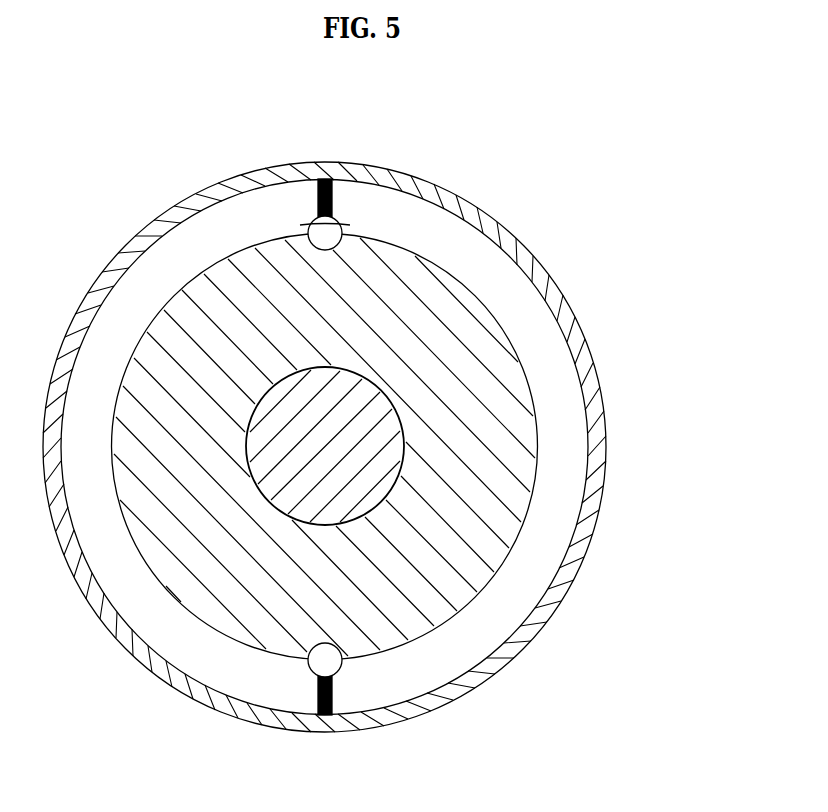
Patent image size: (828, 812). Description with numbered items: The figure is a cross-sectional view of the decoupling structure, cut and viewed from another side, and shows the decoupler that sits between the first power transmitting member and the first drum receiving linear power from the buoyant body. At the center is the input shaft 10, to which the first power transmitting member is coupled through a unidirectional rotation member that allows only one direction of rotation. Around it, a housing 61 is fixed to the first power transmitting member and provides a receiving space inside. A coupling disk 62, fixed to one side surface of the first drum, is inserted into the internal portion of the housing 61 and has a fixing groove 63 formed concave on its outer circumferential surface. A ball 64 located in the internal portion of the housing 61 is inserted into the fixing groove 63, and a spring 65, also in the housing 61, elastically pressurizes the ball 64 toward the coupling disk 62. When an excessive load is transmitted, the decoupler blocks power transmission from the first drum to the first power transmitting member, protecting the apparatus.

The input shaft 10 is at (272, 405).
The housing 61 is at (600, 433).
The coupling disk 62 is at (468, 323).
The fixing groove 63 is at (340, 219).
The ball 64 is at (308, 222).
The spring 65 is at (346, 178).